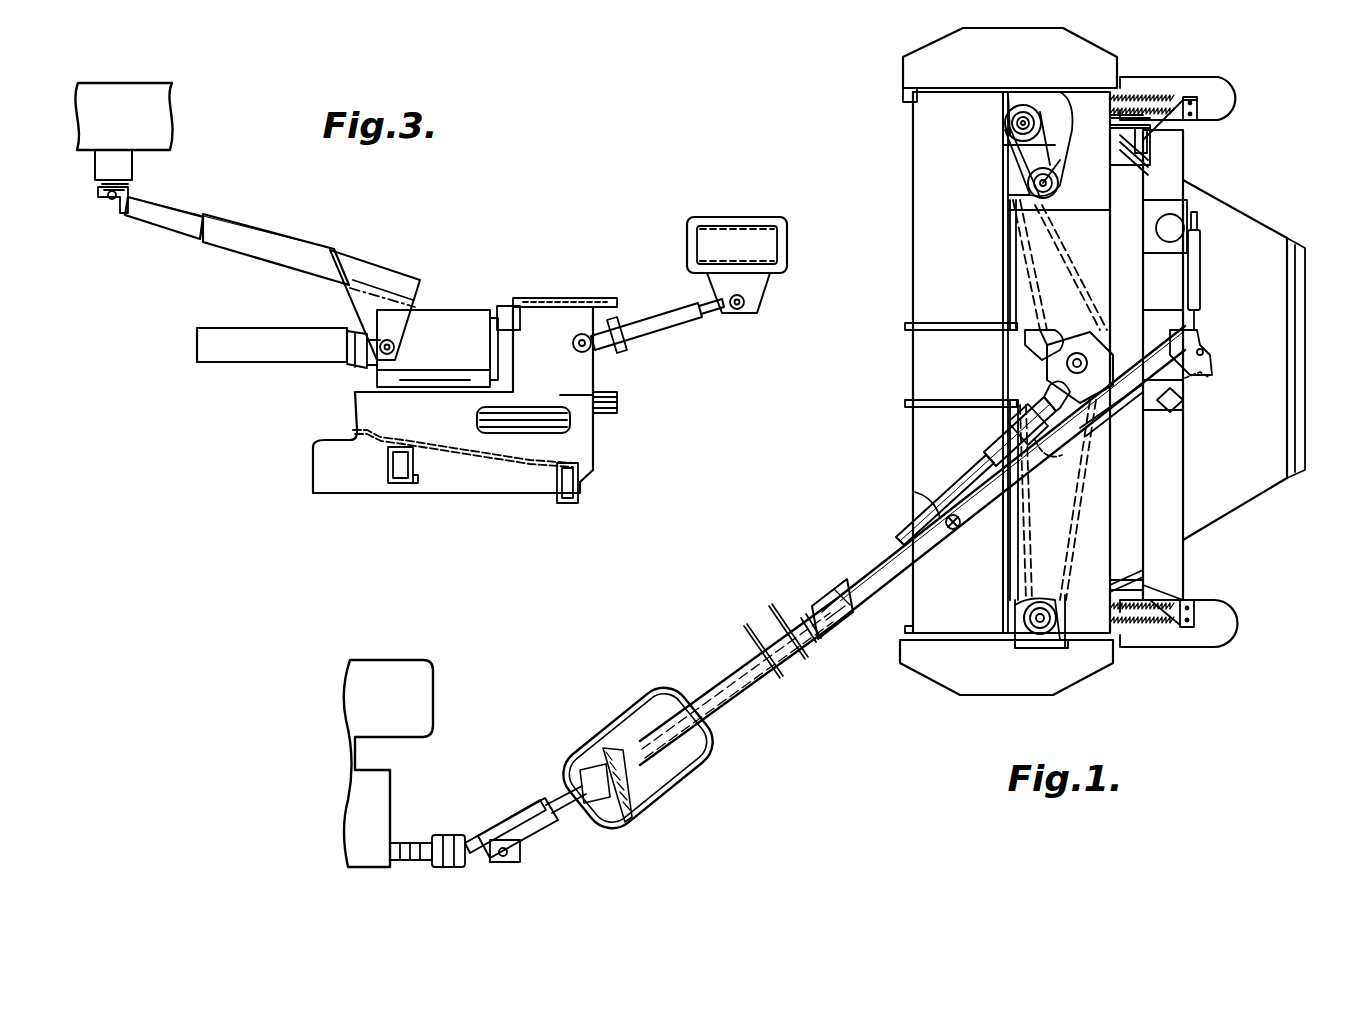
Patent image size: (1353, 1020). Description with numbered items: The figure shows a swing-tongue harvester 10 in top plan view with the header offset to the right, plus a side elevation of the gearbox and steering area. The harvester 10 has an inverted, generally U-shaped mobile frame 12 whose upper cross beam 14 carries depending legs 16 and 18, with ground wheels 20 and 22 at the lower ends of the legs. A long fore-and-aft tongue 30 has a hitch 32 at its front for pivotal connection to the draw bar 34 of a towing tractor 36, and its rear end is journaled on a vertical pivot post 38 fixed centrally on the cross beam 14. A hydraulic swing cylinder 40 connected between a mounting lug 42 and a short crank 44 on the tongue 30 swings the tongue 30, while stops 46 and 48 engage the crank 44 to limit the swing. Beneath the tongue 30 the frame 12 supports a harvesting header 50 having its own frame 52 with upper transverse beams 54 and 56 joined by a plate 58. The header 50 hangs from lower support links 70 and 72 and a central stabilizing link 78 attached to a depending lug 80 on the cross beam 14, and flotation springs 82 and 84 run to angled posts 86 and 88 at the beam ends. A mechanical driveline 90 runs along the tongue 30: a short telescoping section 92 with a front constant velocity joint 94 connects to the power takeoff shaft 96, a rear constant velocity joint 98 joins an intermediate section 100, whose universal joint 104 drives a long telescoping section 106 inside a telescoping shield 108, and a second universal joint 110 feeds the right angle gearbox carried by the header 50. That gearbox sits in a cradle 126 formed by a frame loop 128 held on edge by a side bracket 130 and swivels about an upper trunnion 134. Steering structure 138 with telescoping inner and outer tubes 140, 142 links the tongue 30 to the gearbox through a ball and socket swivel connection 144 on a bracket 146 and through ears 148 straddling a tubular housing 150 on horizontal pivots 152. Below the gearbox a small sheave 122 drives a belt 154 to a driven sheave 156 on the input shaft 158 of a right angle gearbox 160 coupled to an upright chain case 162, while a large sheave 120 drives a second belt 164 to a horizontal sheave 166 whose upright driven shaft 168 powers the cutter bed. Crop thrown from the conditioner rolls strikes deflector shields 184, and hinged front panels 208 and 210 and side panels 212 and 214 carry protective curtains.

In FIG. 1, the harvester 10 is at (868, 702).
In FIG. 1, the mobile frame 12 is at (1190, 560).
In FIG. 3, the upper cross beam 14 is at (716, 217).
In FIG. 1, the upper cross beam 14 is at (1175, 497).
In FIG. 1, the depending leg 16 is at (1130, 140).
In FIG. 1, the depending leg 18 is at (1118, 580).
In FIG. 1, the ground wheel 20 is at (1232, 98).
In FIG. 1, the ground wheel 22 is at (1228, 630).
In FIG. 3, the tongue 30 is at (165, 97).
In FIG. 1, the tongue 30 is at (808, 648).
In FIG. 1, the hitch 32 is at (518, 852).
In FIG. 1, the draw bar 34 is at (480, 805).
In FIG. 1, the towing tractor 36 is at (355, 785).
In FIG. 1, the vertical pivot post 38 is at (1200, 375).
In FIG. 1, the hydraulic swing cylinder 40 is at (1200, 275).
In FIG. 1, the mounting lug 42 is at (1180, 222).
In FIG. 1, the crank 44 is at (1205, 350).
In FIG. 1, the stop 46 is at (1160, 316).
In FIG. 1, the stop 48 is at (1170, 425).
In FIG. 1, the harvesting header 50 is at (908, 125).
In FIG. 3, the header frame 52 is at (383, 465).
In FIG. 3, the upper transverse beam 54 is at (418, 484).
In FIG. 3, the upper transverse beam 56 is at (580, 490).
In FIG. 3, the plate 58 is at (494, 468).
In FIG. 1, the lower support link 70 is at (1112, 132).
In FIG. 1, the lower support link 72 is at (1110, 585).
In FIG. 3, the stabilizing link 78 is at (683, 322).
In FIG. 1, the stabilizing link 78 is at (1140, 410).
In FIG. 3, the depending lug 80 is at (748, 292).
In FIG. 1, the flotation spring 82 is at (1170, 95).
In FIG. 1, the flotation spring 84 is at (1150, 635).
In FIG. 1, the post 86 is at (1196, 100).
In FIG. 1, the post 88 is at (1195, 602).
In FIG. 1, the mechanical driveline 90 is at (788, 618).
In FIG. 1, the telescoping section 92 is at (497, 825).
In FIG. 1, the front constant velocity joint 94 is at (448, 835).
In FIG. 1, the power takeoff shaft 96 is at (416, 843).
In FIG. 1, the rear constant velocity joint 98 is at (570, 758).
In FIG. 1, the intermediate section 100 is at (735, 700).
In FIG. 1, the universal joint 104 is at (837, 580).
In FIG. 1, the telescoping section 106 is at (925, 510).
In FIG. 3, the telescoping shield 108 is at (240, 352).
In FIG. 1, the universal joint 110 is at (1010, 383).
In FIG. 3, the large sheave 120 is at (618, 398).
In FIG. 1, the large sheave 120 is at (1040, 365).
In FIG. 3, the small diameter sheave 122 is at (575, 420).
In FIG. 1, the small diameter sheave 122 is at (1030, 355).
In FIG. 3, the cradle 126 is at (577, 294).
In FIG. 1, the cradle 126 is at (1125, 322).
In FIG. 3, the frame loop 128 is at (507, 305).
In FIG. 3, the side bracket 130 is at (552, 318).
In FIG. 3, the upper trunnion 134 is at (538, 297).
In FIG. 1, the upper trunnion 134 is at (1080, 320).
In FIG. 3, the steering structure 138 is at (262, 228).
In FIG. 1, the steering structure 138 is at (985, 457).
In FIG. 3, the inner section 140 is at (160, 226).
In FIG. 1, the inner section 140 is at (975, 482).
In FIG. 3, the outer section 142 is at (232, 240).
In FIG. 1, the outer section 142 is at (1010, 455).
In FIG. 3, the ball and socket swivel connection 144 is at (118, 205).
In FIG. 1, the ball and socket swivel connection 144 is at (948, 540).
In FIG. 3, the bracket 146 is at (135, 170).
In FIG. 3, the ears 148 is at (345, 300).
In FIG. 1, the ears 148 is at (1060, 460).
In FIG. 3, the tubular housing 150 is at (432, 310).
In FIG. 3, the horizontal pivots 152 is at (348, 365).
In FIG. 1, the belt 154 is at (1010, 605).
In FIG. 1, the driven sheave 156 is at (1005, 640).
In FIG. 1, the input shaft 158 is at (1038, 640).
In FIG. 1, the right angle gearbox 160 is at (1058, 615).
In FIG. 1, the upright chain case 162 is at (1070, 660).
In FIG. 1, the belt 164 is at (1007, 180).
In FIG. 1, the horizontal sheave 166 is at (1023, 105).
In FIG. 1, the driven shaft 168 is at (1012, 123).
In FIG. 1, the deflector shields 184 is at (1285, 238).
In FIG. 1, the front panel 208 is at (918, 240).
In FIG. 1, the front panel 210 is at (915, 440).
In FIG. 1, the panel 212 is at (940, 50).
In FIG. 1, the panel 214 is at (985, 692).